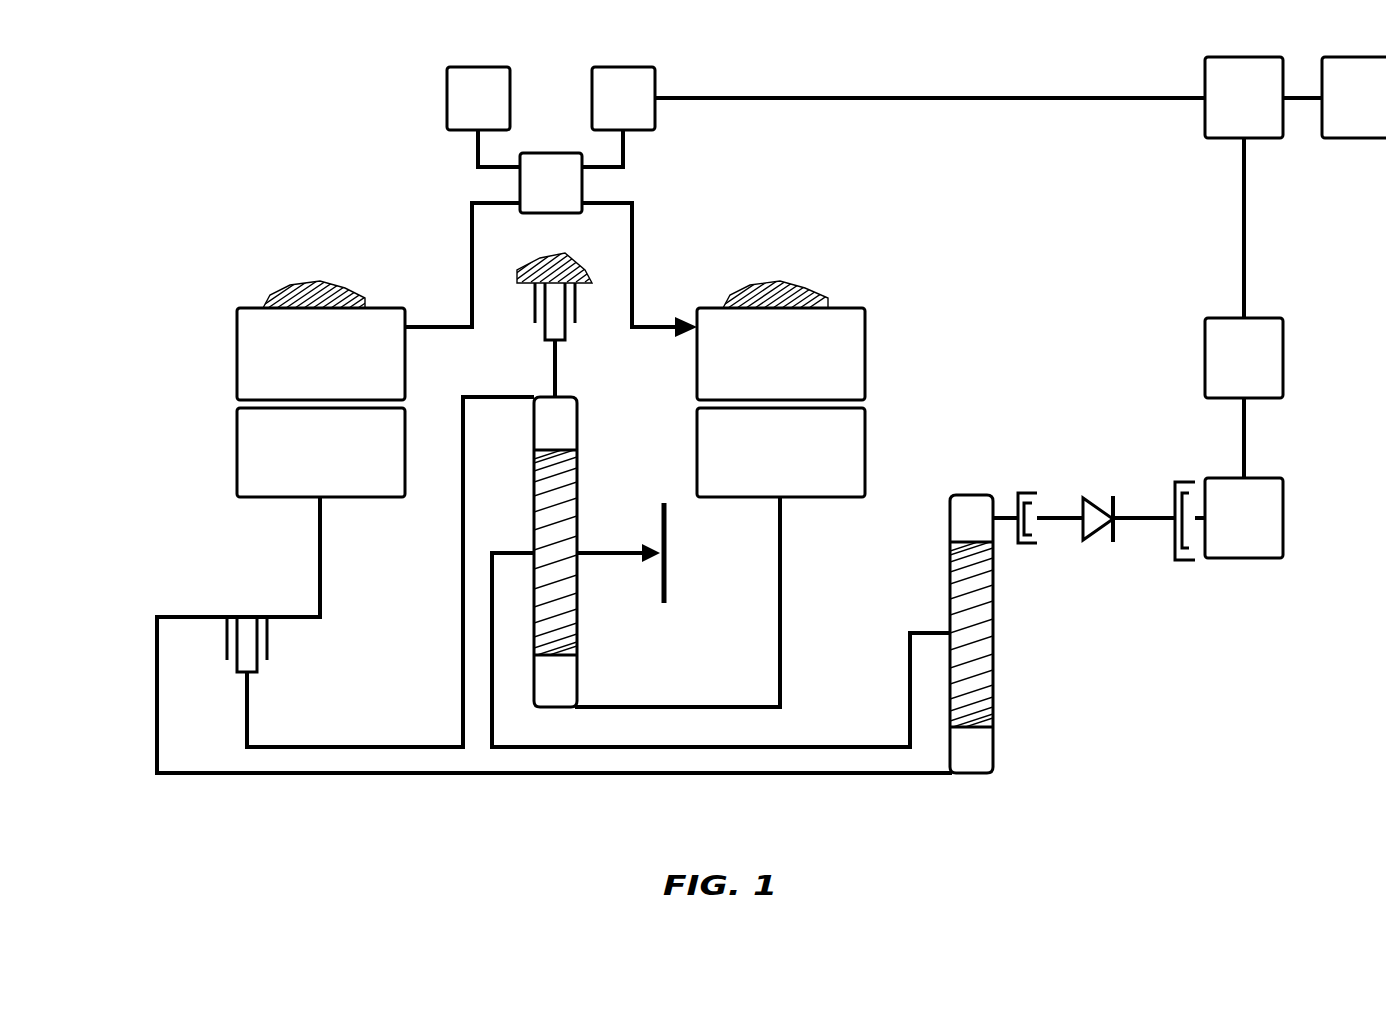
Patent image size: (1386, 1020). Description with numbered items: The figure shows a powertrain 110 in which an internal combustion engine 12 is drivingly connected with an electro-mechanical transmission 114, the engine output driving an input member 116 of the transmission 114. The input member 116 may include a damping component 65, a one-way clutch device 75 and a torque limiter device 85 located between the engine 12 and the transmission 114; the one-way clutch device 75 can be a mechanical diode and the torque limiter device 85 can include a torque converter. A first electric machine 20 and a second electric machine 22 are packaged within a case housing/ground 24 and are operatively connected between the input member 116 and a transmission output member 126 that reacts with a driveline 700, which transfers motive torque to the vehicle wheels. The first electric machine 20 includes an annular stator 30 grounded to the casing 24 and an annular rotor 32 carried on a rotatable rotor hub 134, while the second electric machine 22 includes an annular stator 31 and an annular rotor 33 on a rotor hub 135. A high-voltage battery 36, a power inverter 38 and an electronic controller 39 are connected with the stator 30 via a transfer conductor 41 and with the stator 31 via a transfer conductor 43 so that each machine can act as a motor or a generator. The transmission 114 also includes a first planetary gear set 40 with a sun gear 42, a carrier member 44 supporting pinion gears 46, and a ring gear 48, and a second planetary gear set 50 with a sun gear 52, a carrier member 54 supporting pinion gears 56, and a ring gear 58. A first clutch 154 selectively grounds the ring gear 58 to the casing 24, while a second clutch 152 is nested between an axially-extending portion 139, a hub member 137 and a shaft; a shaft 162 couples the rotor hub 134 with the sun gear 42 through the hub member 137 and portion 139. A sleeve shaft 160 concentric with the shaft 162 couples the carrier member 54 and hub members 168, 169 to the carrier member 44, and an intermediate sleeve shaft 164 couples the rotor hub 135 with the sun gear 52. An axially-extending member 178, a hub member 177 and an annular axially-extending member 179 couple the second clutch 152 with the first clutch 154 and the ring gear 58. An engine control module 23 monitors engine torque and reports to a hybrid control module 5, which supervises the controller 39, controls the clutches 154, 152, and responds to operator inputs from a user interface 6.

The hybrid control module 5 is at (1263, 187).
The user interface 6 is at (1354, 97).
The internal combustion engine 12 is at (1244, 518).
The first electric machine 20 is at (205, 420).
The second electric machine 22 is at (885, 385).
The engine control module 23 is at (1244, 398).
The case housing/ground 24 is at (312, 281).
The annular stator 30 is at (321, 354).
The annular stator 31 is at (781, 354).
The annular rotor 32 is at (321, 452).
The annular rotor 33 is at (781, 452).
The high-voltage battery 36 is at (483, 117).
The power inverter 38 is at (551, 183).
The electronic controller 39 is at (893, 117).
The first planetary gear set 40 is at (1011, 607).
The transfer conductor 41 is at (440, 325).
The sun gear 42 is at (995, 752).
The transfer conductor 43 is at (632, 270).
The carrier member 44 is at (930, 633).
The pinion gears 46 is at (995, 592).
The ring gear 48 is at (975, 495).
The second planetary gear set 50 is at (605, 549).
The sun gear 52 is at (578, 685).
The carrier member 54 is at (518, 553).
The pinion gears 56 is at (578, 490).
The ring gear 58 is at (578, 425).
The damping component 65 is at (1182, 482).
The one-way clutch device 75 is at (1098, 498).
The torque limiter device 85 is at (1025, 493).
The powertrain 110 is at (920, 280).
The electro-mechanical transmission 114 is at (205, 285).
The input member 116 is at (1057, 518).
The transmission output member 126 is at (622, 556).
The rotor hub 134 is at (318, 582).
The rotor hub 135 is at (782, 556).
The hub member 137 is at (157, 690).
The axially-extending portion 139 is at (192, 617).
The second clutch 152 is at (275, 668).
The first clutch 154 is at (585, 318).
The sleeve shaft 160 is at (842, 747).
The shaft 162 is at (697, 773).
The intermediate sleeve shaft 164 is at (752, 707).
The hub member 168 is at (490, 607).
The hub member 169 is at (910, 660).
The hub member 177 is at (462, 562).
The axially-extending member 178 is at (520, 397).
The axially-extending member 179 is at (388, 747).
The driveline 700 is at (668, 540).